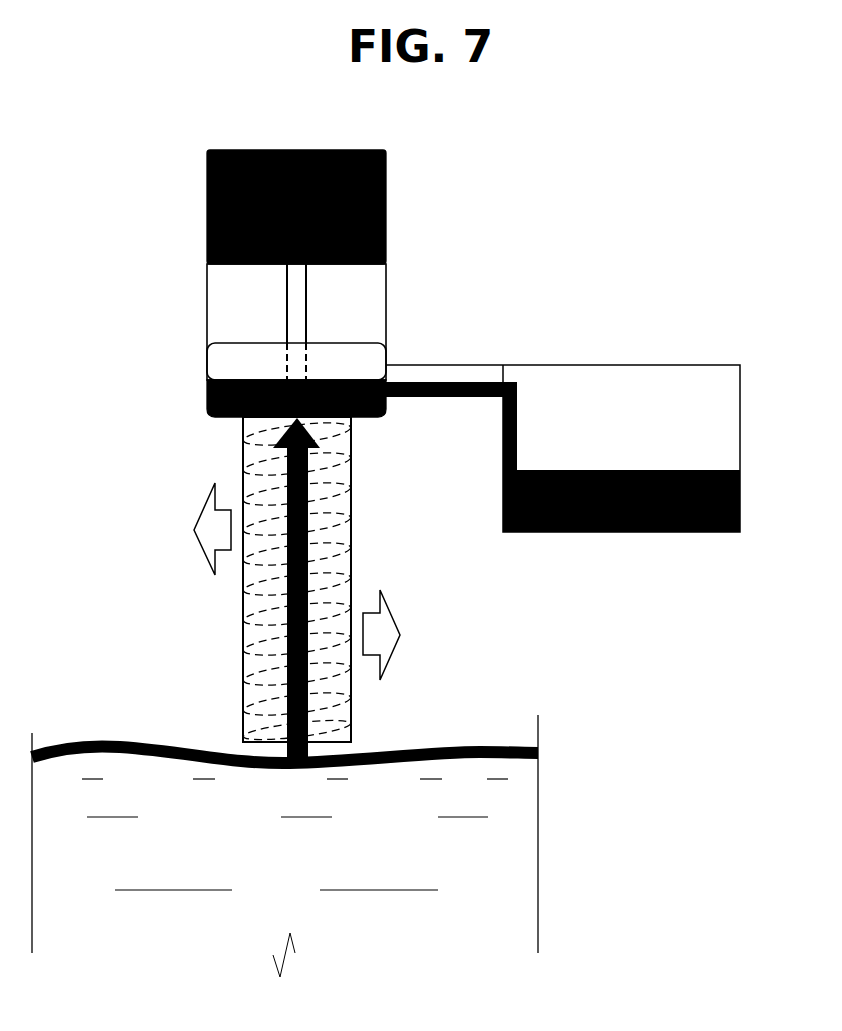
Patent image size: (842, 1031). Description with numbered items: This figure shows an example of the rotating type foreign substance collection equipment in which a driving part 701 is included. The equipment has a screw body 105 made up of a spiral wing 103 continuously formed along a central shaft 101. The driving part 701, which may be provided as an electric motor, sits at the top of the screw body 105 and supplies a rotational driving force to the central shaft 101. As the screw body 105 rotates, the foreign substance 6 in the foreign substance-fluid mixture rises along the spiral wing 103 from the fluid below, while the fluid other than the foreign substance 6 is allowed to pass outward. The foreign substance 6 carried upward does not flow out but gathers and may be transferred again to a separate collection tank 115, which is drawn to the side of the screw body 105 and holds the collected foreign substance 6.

The driving part 701 is at (386, 192).
The central shaft 101 is at (293, 299).
The spiral wing 103 is at (258, 667).
The screw body 105 is at (460, 527).
The collection tank 115 is at (608, 397).
The foreign substance 6 is at (640, 470).